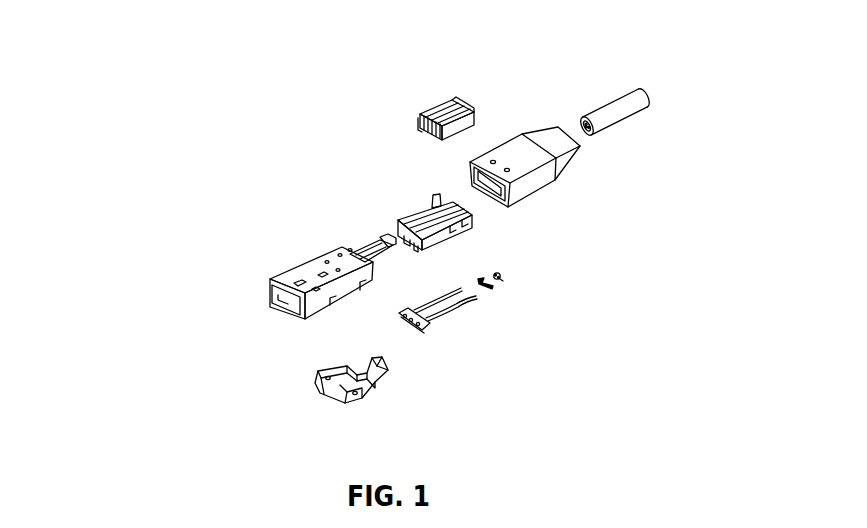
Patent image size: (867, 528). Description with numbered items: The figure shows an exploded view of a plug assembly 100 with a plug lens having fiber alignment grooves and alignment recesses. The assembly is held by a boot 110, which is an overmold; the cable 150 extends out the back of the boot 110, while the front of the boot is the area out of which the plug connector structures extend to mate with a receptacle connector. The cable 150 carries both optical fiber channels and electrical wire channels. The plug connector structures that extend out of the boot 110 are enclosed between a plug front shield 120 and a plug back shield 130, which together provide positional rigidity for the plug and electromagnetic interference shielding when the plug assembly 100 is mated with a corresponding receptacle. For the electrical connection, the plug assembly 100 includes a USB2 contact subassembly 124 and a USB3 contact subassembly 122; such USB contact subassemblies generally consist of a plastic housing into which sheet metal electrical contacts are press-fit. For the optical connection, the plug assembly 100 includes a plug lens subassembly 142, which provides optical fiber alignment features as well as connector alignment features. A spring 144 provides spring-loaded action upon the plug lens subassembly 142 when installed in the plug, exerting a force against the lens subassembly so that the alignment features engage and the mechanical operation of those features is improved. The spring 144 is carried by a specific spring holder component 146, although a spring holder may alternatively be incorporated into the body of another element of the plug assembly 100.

The plug assembly 100 is at (124, 44).
The boot 110 is at (572, 166).
The plug front shield 120 is at (292, 264).
The USB3 contact subassembly 122 is at (420, 97).
The USB2 contact subassembly 124 is at (394, 204).
The plug back shield 130 is at (366, 406).
The plug lens subassembly 142 is at (428, 333).
The spring 144 is at (500, 289).
The spring holder component 146 is at (515, 267).
The cable 150 is at (608, 138).